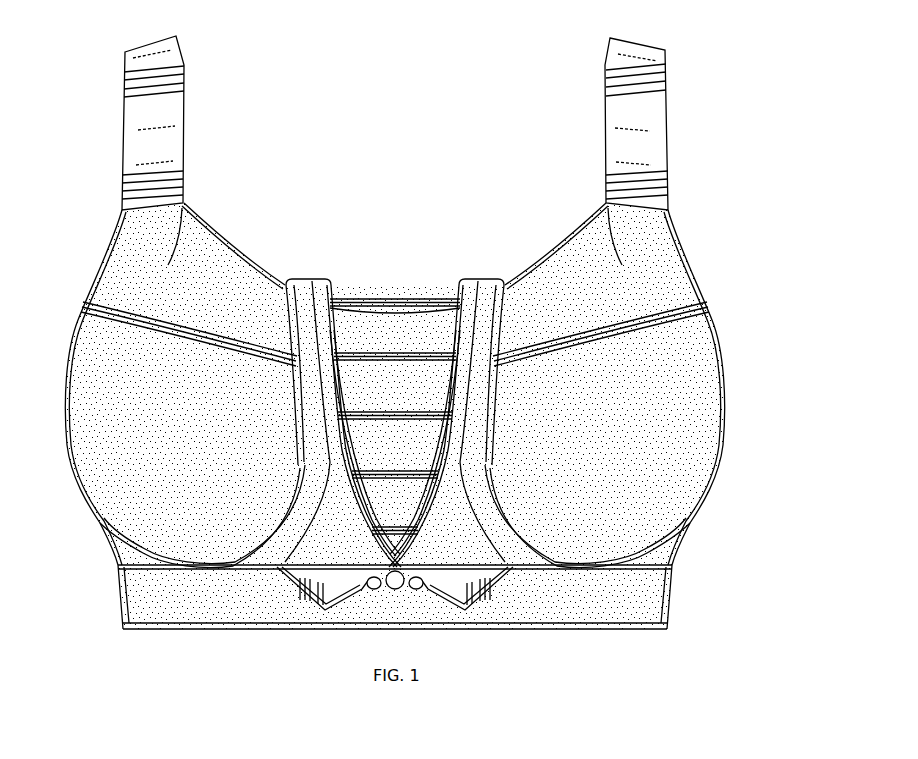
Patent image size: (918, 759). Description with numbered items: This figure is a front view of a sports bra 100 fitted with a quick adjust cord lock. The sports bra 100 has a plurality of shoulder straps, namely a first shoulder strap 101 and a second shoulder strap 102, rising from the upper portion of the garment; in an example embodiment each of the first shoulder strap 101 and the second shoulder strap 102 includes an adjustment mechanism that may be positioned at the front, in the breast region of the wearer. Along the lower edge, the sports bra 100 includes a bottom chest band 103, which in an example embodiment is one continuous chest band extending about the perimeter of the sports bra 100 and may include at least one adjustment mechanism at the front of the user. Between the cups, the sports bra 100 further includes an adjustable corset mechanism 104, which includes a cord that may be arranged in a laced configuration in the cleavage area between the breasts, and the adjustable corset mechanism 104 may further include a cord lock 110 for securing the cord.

The sports bra 100 is at (755, 35).
The first shoulder strap 101 is at (148, 152).
The second shoulder strap 102 is at (630, 137).
The bottom chest band 103 is at (315, 578).
The adjustable corset mechanism 104 is at (397, 337).
The cord lock 110 is at (408, 585).